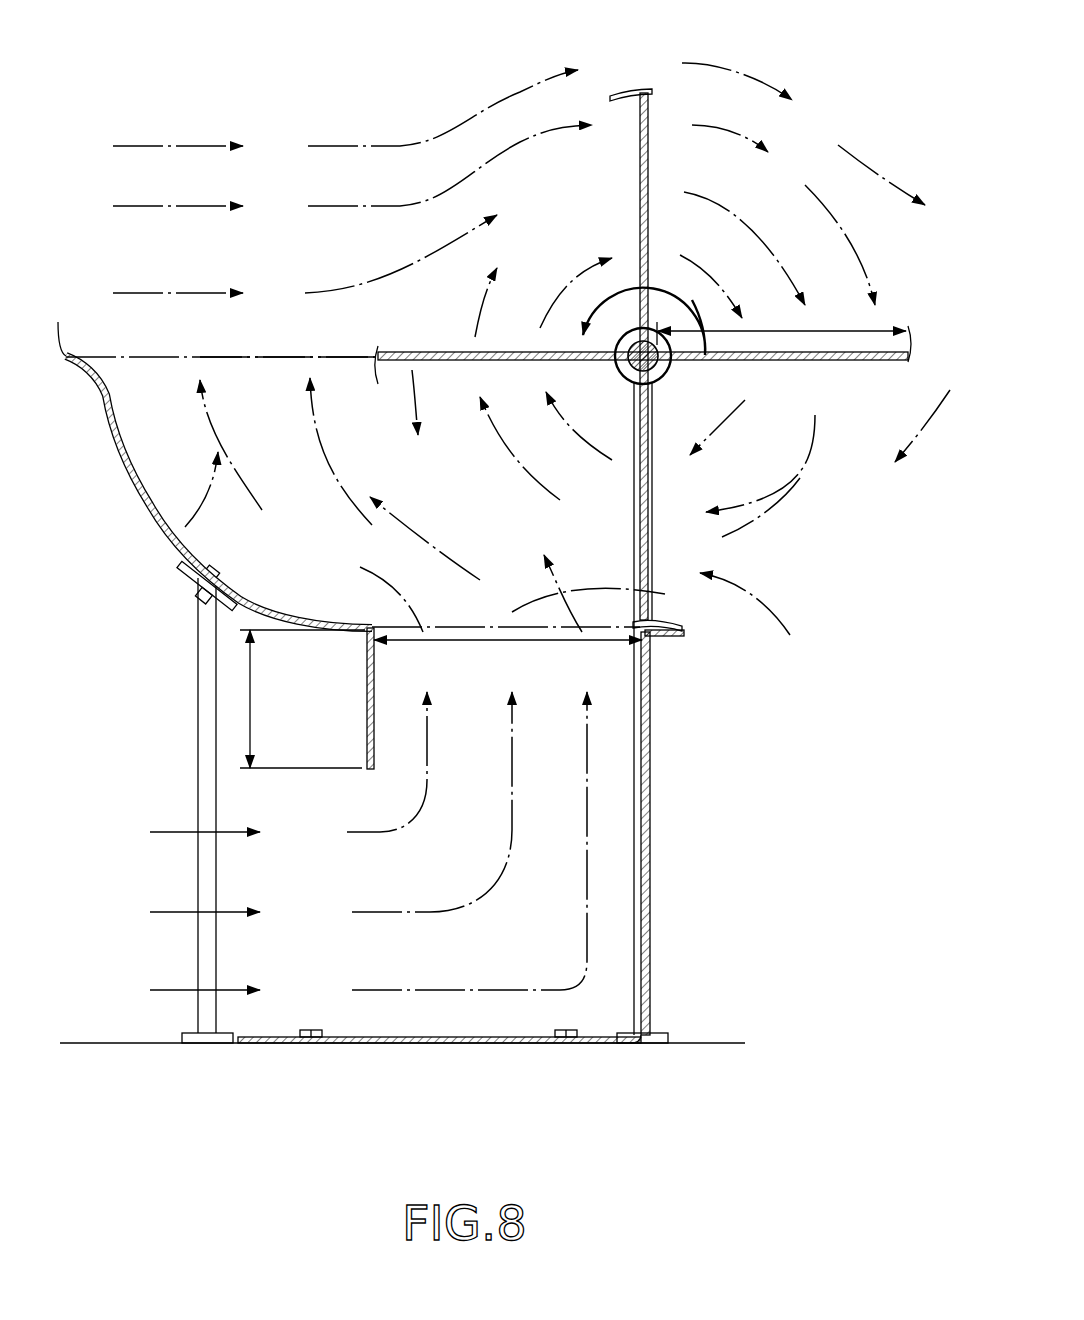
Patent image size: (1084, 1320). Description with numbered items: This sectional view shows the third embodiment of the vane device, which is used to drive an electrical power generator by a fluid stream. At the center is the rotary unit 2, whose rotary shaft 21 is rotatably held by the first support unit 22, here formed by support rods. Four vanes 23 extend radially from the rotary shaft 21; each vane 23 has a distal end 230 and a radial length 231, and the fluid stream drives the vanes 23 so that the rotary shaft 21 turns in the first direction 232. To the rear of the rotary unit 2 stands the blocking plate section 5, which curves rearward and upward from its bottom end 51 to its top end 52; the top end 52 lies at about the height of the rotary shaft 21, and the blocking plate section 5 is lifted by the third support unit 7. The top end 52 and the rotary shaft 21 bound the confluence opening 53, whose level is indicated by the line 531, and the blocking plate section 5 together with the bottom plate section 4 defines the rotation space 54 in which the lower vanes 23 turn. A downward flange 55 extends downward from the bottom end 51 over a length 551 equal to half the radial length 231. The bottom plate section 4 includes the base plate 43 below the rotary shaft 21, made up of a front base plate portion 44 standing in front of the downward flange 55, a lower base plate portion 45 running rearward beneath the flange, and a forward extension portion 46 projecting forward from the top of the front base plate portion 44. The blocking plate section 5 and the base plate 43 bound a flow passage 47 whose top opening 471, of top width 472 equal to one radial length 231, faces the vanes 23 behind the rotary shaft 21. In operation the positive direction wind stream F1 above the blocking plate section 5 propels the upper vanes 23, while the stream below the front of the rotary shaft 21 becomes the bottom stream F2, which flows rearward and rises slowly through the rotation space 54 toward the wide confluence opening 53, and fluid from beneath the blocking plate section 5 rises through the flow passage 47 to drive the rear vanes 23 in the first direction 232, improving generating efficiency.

The rotary unit 2 is at (650, 517).
The rotary shaft 21 is at (650, 342).
The first support unit 22 is at (640, 510).
The vane 23 is at (650, 145).
The distal end 230 is at (660, 622).
The radial length 231 is at (798, 332).
The first direction 232 is at (704, 372).
The bottom plate section 4 is at (486, 885).
The base plate 43 is at (362, 1048).
The front base plate portion 44 is at (648, 795).
The lower base plate portion 45 is at (460, 1045).
The forward extension portion 46 is at (672, 638).
The flow passage 47 is at (548, 748).
The top opening 471 is at (598, 600).
The top width 472 is at (540, 655).
The blocking plate section 5 is at (118, 455).
The bottom end 51 is at (368, 628).
The top end 52 is at (59, 321).
The confluence opening 53 is at (192, 356).
The axis line 531 is at (300, 357).
The rotation space 54 is at (412, 372).
The downward flange 55 is at (368, 745).
The length 551 is at (250, 690).
The third support unit 7 is at (188, 884).
The positive direction wind stream F1 is at (178, 146).
The bottom stream F2 is at (190, 525).